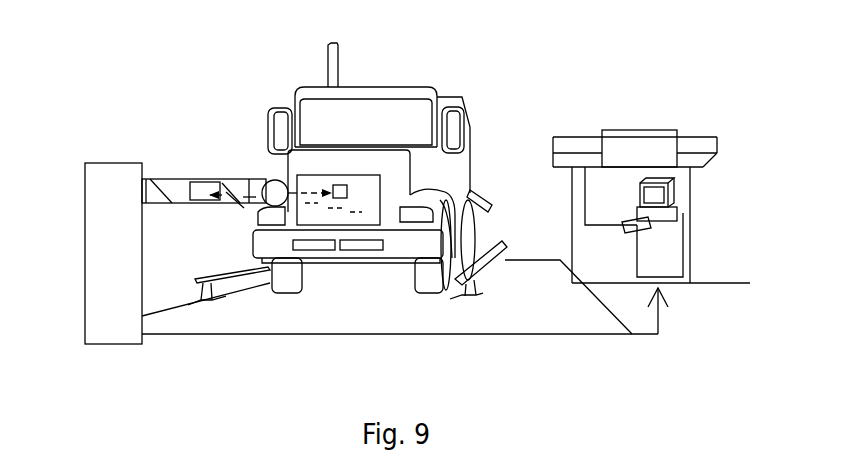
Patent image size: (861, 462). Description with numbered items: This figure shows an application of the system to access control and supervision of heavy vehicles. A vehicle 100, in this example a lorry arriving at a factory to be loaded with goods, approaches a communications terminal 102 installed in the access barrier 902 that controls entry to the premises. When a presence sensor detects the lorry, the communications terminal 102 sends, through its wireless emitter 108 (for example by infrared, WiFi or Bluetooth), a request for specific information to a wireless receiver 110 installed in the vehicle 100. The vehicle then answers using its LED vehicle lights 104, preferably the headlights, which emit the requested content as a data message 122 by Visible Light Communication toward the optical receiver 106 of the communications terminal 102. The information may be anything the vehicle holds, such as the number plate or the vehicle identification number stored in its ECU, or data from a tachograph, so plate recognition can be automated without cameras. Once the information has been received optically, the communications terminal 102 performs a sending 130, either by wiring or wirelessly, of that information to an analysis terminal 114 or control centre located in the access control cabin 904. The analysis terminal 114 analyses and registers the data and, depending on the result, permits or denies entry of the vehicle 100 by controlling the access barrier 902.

The vehicle 100 is at (389, 208).
The communications terminal 102 is at (172, 178).
The vehicle lights 104 is at (414, 220).
The optical receiver 106 is at (202, 194).
The wireless emitter 108 is at (266, 183).
The wireless receiver 110 is at (342, 185).
The analysis terminal 114 is at (677, 212).
The data message 122 is at (341, 200).
The sending of information 130 is at (642, 334).
The access barrier 902 is at (82, 248).
The access control cabin 904 is at (662, 178).